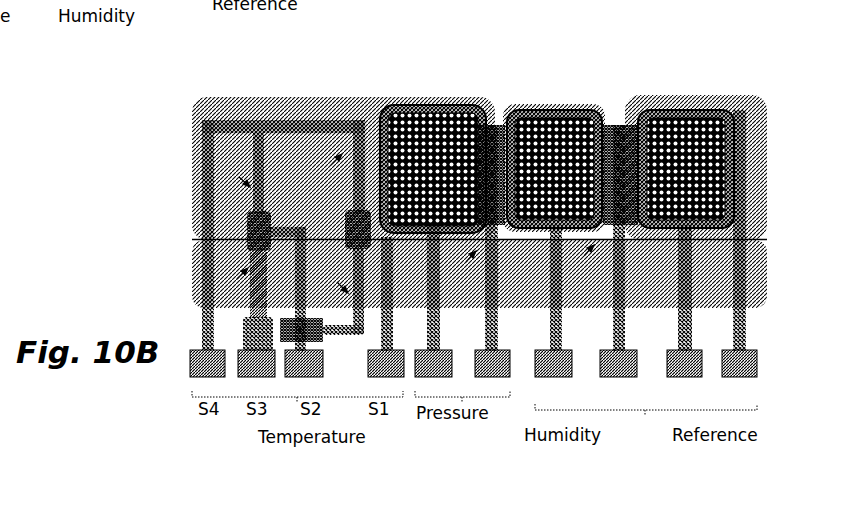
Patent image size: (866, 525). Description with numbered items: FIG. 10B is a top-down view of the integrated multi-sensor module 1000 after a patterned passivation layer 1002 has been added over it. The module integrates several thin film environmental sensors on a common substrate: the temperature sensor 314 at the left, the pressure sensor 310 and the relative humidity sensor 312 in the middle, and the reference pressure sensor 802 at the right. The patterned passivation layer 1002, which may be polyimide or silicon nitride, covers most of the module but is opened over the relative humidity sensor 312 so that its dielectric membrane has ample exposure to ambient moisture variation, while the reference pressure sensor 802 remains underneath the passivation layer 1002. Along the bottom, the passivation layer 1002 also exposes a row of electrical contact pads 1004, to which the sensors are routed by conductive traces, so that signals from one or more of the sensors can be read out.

The integrated multi-sensor module 1000 is at (518, 194).
The patterned passivation layer 1002 is at (350, 102).
The electrical contact pads 1004 is at (770, 361).
The temperature sensor 314 is at (287, 82).
The pressure sensor 310 is at (437, 78).
The relative humidity sensor 312 is at (556, 82).
The reference pressure sensor 802 is at (690, 83).